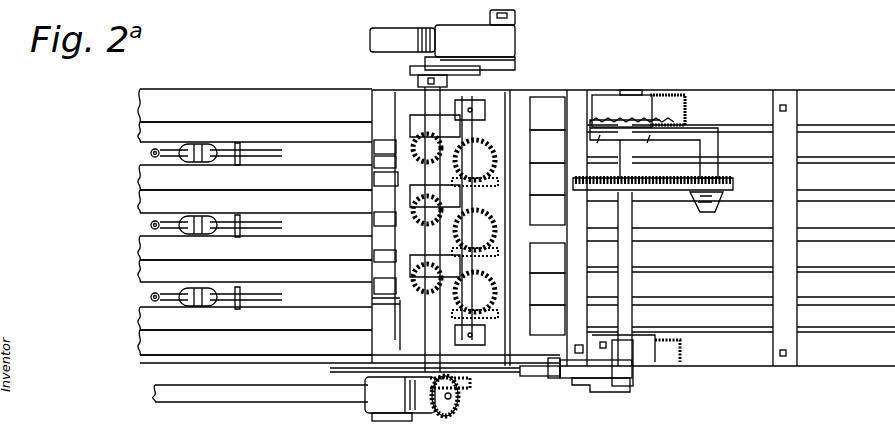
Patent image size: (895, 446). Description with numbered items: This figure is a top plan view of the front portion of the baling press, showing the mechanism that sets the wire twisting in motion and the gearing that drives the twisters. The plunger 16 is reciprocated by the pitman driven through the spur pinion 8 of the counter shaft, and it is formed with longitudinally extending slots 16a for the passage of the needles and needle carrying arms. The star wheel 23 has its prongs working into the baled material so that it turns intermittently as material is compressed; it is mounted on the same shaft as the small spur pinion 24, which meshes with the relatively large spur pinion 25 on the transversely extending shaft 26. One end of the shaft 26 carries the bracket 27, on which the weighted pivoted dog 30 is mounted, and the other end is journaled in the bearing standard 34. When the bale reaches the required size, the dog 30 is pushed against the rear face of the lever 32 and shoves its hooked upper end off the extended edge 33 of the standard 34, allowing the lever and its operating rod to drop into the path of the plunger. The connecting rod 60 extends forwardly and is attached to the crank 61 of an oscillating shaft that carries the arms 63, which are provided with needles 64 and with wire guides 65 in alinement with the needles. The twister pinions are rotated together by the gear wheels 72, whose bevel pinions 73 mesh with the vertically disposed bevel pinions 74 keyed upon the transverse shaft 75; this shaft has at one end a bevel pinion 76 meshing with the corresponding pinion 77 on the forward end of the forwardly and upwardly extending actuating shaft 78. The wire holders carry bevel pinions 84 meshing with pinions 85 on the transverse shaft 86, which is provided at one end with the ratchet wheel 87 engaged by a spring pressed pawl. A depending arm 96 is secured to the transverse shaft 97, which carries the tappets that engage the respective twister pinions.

The spur pinion 8 is at (380, 285).
The plunger 16 is at (152, 257).
The longitudinally extending slots 16a is at (160, 208).
The star wheel 23 is at (755, 190).
The spur pinion 24 is at (705, 210).
The spur pinion 25 is at (600, 198).
The shaft 26 is at (630, 255).
The bracket 27 is at (633, 383).
The pivoted dog 30 is at (608, 395).
The lever 32 is at (560, 380).
The extended edge 33 is at (565, 352).
The bearing standard 34 is at (668, 348).
The connecting rod 60 is at (392, 36).
The crank 61 is at (500, 60).
The arms 63 is at (325, 156).
The needles 64 is at (150, 154).
The wire guides 65 is at (240, 148).
The gear wheels 72 is at (500, 140).
The bevel pinions 73 is at (490, 238).
The bevel pinions 74 is at (490, 305).
The shaft 75 is at (470, 200).
The bevel pinion 76 is at (470, 385).
The pinion 77 is at (450, 405).
The actuating shaft 78 is at (178, 382).
The bevel pinions 84 is at (380, 162).
The pinions 85 is at (375, 142).
The shaft 86 is at (385, 184).
The ratchet wheel 87 is at (410, 72).
The depending arm 96 is at (380, 360).
The shaft 97 is at (378, 300).